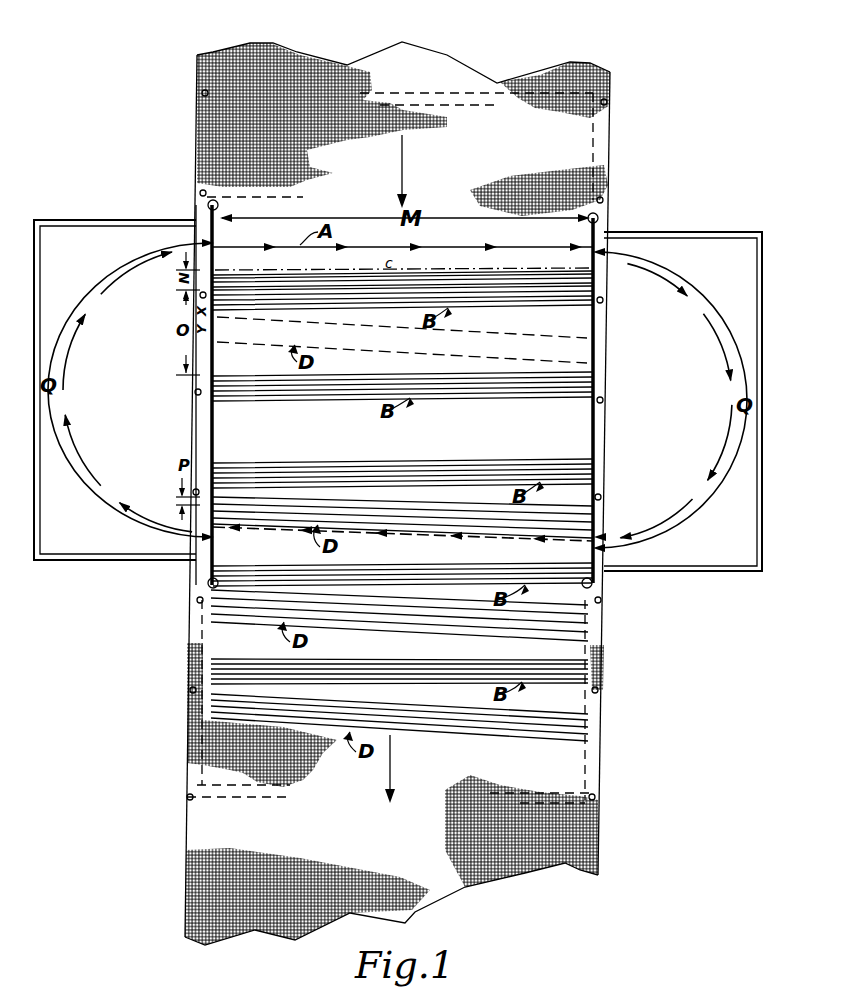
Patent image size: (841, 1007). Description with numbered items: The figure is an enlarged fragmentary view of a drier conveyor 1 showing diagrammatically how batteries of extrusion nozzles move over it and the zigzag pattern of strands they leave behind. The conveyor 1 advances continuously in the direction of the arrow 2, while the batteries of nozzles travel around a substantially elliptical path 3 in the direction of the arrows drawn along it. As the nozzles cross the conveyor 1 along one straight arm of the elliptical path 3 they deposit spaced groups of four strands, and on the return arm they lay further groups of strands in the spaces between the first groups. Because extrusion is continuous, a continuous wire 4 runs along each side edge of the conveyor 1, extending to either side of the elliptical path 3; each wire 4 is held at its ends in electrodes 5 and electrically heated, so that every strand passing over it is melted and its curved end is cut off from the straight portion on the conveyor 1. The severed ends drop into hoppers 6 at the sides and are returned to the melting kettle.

The conveyor 1 is at (405, 66).
The arrow indicating direction of conveyor movement 2 is at (404, 469).
The elliptical path 3 is at (100, 289).
The continuous wire 4 is at (207, 430).
The electrode 5 is at (208, 204).
The hopper 6 is at (88, 242).